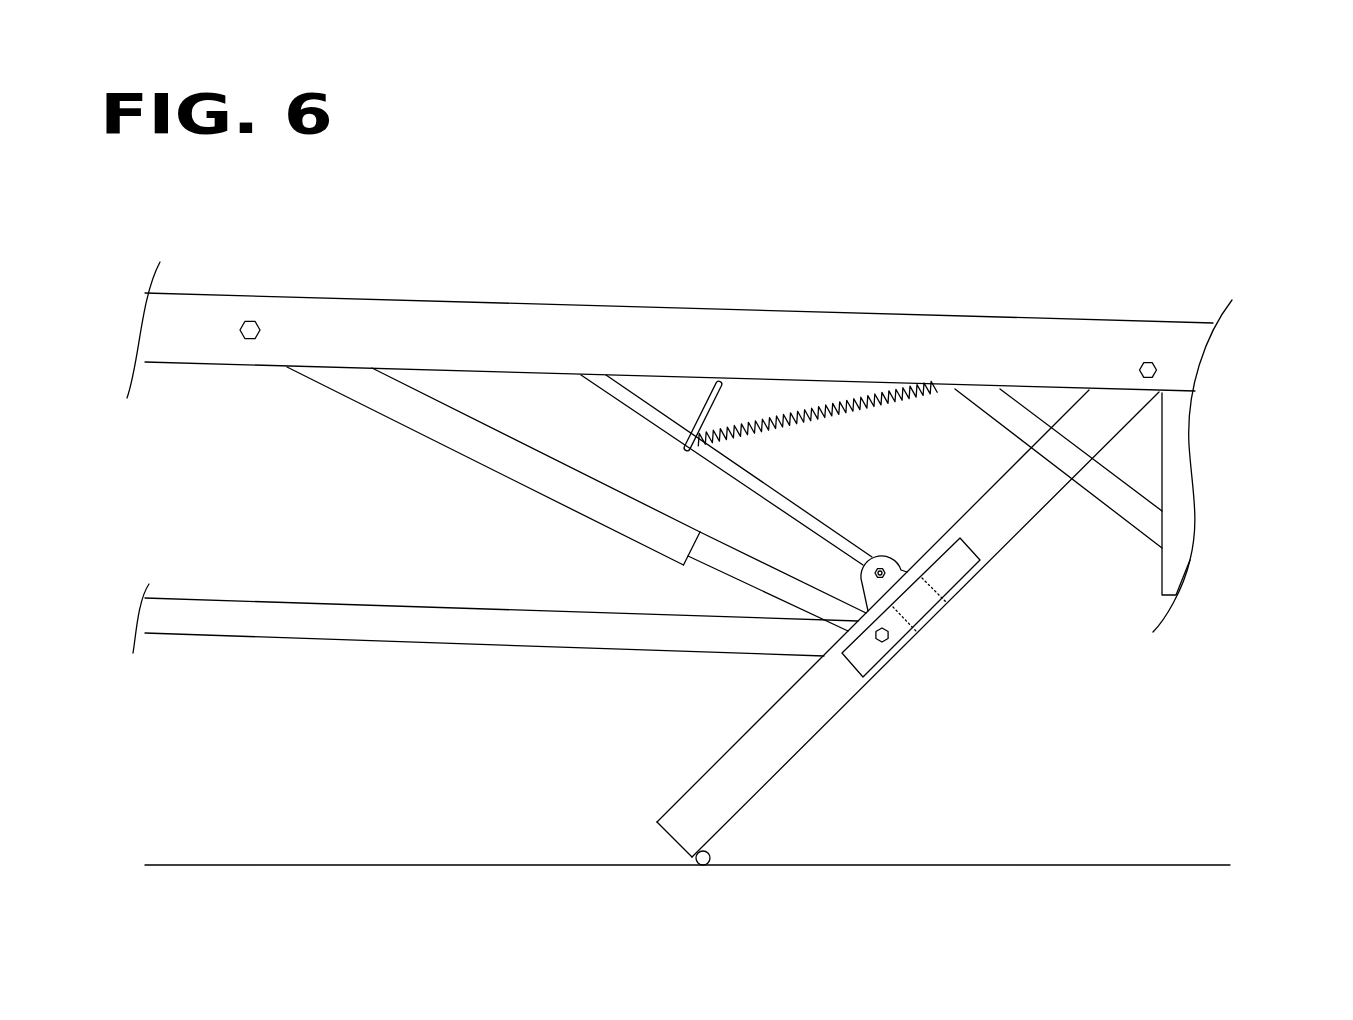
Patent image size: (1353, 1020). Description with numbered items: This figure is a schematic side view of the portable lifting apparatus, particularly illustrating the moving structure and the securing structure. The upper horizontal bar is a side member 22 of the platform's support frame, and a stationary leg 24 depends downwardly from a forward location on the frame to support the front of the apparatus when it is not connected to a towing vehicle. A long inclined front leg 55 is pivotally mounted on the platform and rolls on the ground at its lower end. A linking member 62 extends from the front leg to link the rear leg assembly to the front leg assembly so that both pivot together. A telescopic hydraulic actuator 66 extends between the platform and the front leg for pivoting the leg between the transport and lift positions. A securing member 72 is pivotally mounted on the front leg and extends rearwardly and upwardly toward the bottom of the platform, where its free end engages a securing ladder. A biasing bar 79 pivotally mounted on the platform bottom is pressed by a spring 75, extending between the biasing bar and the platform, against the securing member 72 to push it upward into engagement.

The side member 22 is at (888, 338).
The stationary leg 24 is at (1182, 492).
The support arm 55 is at (765, 753).
The linking member 62 is at (588, 627).
The telescopic hydraulic actuator 66 is at (533, 468).
The securing member 72 is at (773, 492).
The spring 75 is at (827, 400).
The biasing bar 79 is at (703, 403).